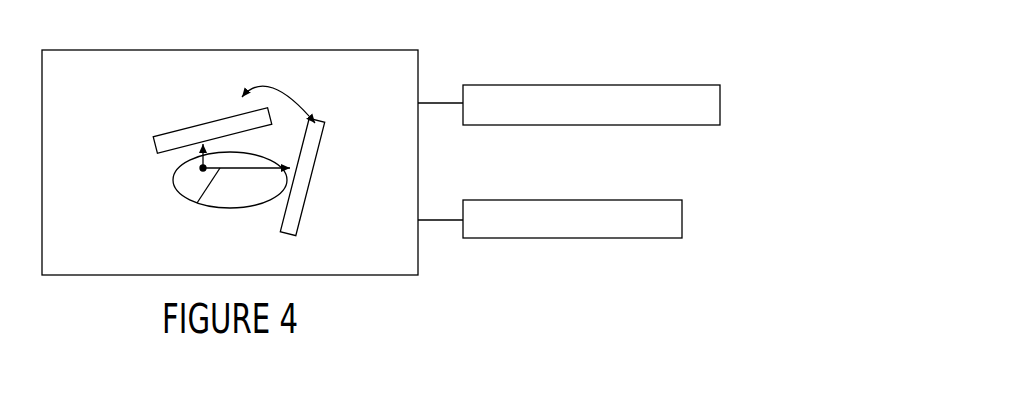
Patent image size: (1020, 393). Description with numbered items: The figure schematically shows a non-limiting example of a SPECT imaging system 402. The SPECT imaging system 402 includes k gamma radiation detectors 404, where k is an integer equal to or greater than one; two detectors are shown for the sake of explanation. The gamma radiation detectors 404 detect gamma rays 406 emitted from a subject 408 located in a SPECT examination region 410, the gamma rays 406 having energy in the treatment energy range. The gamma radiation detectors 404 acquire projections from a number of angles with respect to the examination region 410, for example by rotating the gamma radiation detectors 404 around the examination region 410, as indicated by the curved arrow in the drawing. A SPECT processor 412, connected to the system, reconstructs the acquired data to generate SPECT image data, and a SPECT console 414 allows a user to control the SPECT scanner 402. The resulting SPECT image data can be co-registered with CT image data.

The SPECT imaging system 402 is at (230, 50).
The gamma radiation detectors 404 is at (352, 190).
The gamma rays 406 is at (200, 153).
The subject 408 is at (230, 208).
The SPECT examination region 410 is at (250, 258).
The SPECT processor 412 is at (592, 85).
The SPECT console 414 is at (573, 198).